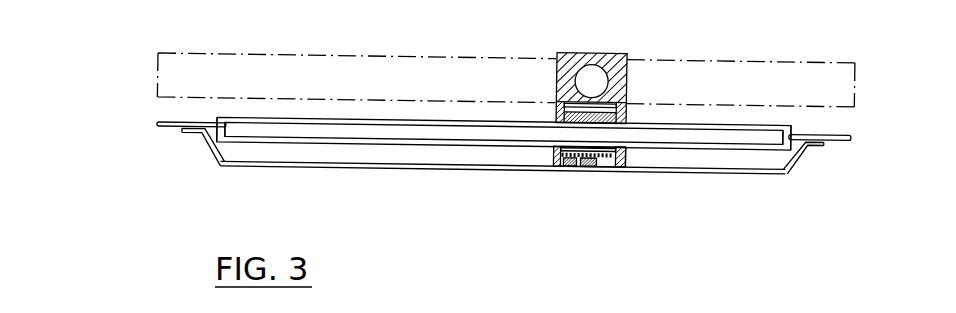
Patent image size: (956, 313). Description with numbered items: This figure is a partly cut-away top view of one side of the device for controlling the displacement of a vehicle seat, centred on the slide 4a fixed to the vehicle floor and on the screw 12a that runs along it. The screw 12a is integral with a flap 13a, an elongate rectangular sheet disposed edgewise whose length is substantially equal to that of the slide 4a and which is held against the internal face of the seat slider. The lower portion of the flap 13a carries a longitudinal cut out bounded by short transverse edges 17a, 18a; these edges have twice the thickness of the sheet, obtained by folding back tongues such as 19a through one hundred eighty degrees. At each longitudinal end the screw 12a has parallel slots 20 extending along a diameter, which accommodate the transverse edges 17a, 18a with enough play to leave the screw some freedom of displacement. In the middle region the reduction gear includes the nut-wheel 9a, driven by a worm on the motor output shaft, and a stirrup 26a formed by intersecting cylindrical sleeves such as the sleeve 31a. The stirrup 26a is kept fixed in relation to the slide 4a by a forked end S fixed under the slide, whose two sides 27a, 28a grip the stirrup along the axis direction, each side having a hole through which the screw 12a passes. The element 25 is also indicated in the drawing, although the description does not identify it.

The slide 4a is at (458, 77).
The screw 12a is at (397, 135).
The flap 13a is at (172, 120).
The slot 20 is at (215, 122).
The bottom plate 25 is at (312, 162).
The short transverse edge 18a is at (240, 133).
The tongue 19a is at (795, 150).
The short transverse edge 17a is at (748, 205).
The side of forked end 28a is at (553, 110).
The side of forked end 27a is at (640, 110).
The forked end S is at (550, 157).
The cylindrical sleeve 31a is at (577, 166).
The stirrup 26a is at (600, 172).
The nut-wheel 9a is at (623, 166).